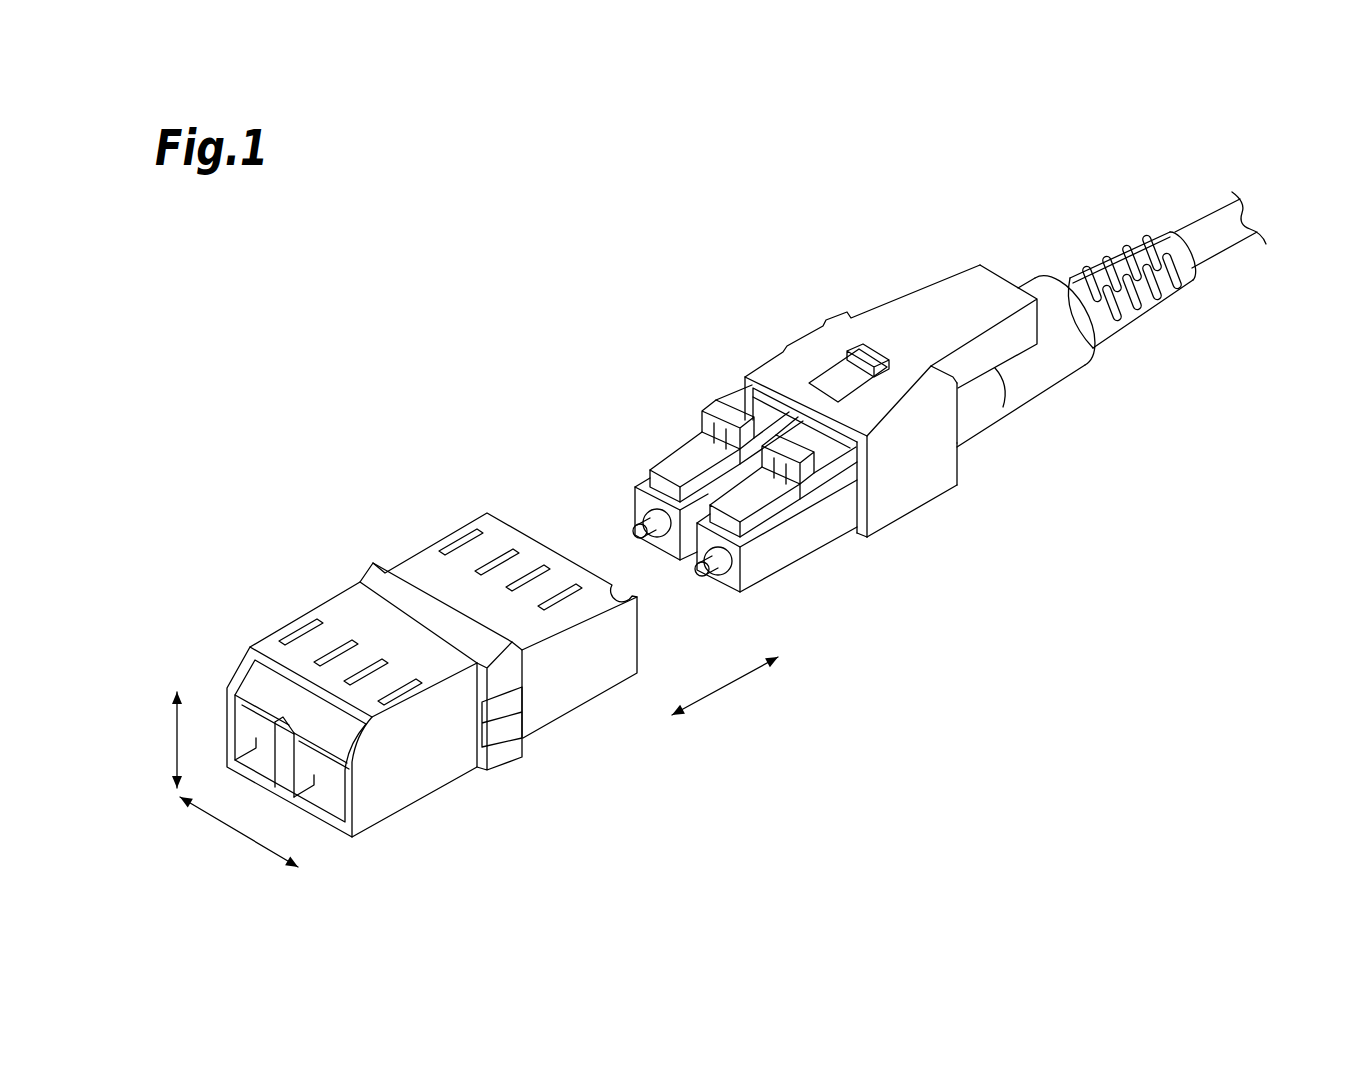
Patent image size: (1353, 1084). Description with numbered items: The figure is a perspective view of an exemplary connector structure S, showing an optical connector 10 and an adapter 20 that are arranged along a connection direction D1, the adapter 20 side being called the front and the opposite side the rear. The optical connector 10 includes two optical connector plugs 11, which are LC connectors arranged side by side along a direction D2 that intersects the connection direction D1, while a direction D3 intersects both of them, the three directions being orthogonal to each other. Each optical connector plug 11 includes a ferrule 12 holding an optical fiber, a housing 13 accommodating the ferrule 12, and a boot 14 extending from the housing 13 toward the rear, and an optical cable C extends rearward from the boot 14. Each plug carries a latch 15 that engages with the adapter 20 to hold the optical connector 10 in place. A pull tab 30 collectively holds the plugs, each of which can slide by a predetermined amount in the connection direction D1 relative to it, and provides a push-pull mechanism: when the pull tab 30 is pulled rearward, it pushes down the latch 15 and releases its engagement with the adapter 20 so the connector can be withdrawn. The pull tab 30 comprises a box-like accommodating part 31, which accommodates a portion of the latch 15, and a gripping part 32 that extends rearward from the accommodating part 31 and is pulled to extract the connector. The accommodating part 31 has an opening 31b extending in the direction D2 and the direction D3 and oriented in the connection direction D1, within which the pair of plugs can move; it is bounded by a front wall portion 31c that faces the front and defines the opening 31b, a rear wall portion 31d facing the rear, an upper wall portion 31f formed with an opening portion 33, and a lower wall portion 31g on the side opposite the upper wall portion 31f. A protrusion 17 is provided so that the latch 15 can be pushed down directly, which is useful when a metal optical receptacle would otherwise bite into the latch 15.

The connector structure S is at (728, 221).
The optical connector 10 is at (933, 247).
The optical connector plug 11 is at (636, 474).
The ferrule 12 is at (636, 508).
The housing 13 is at (648, 482).
The latch 15 is at (717, 414).
The protrusion 17 is at (862, 346).
The adapter 20 is at (487, 513).
The pull tab 30 is at (981, 262).
The accommodating part 31 is at (807, 353).
The opening 31b is at (838, 518).
The front wall portion 31c is at (848, 514).
The rear wall portion 31d is at (959, 459).
The upper wall portion 31f is at (959, 483).
The lower wall portion 31g is at (934, 504).
The gripping part 32 is at (1060, 333).
The opening portion 33 is at (820, 375).
The boot 14 is at (1140, 244).
The optical cable C is at (1220, 240).
The connection direction D1 is at (725, 686).
The direction D2 is at (239, 832).
The direction D3 is at (155, 740).